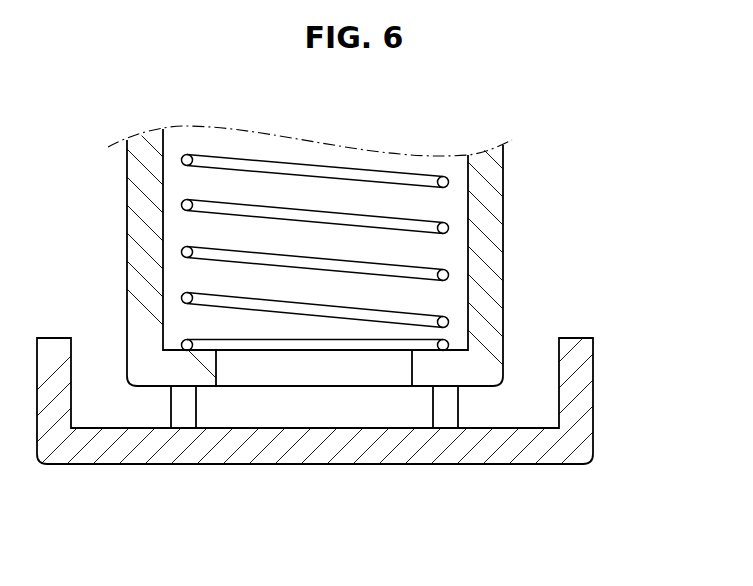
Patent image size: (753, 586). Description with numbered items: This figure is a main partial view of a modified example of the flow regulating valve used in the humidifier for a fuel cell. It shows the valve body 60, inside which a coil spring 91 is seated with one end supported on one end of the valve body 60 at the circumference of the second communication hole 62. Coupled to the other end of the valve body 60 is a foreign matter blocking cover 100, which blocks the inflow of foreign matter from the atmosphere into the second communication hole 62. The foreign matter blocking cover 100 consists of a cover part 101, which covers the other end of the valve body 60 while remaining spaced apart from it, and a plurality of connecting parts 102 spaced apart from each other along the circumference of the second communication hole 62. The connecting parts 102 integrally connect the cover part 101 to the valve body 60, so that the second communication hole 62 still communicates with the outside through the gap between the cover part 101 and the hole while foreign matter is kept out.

The valve body 60 is at (512, 216).
The coil spring 91 is at (185, 203).
The second communication hole 62 is at (290, 370).
The foreign matter blocking cover 100 is at (487, 478).
The cover part 101 is at (580, 397).
The connecting parts 102 is at (178, 410).